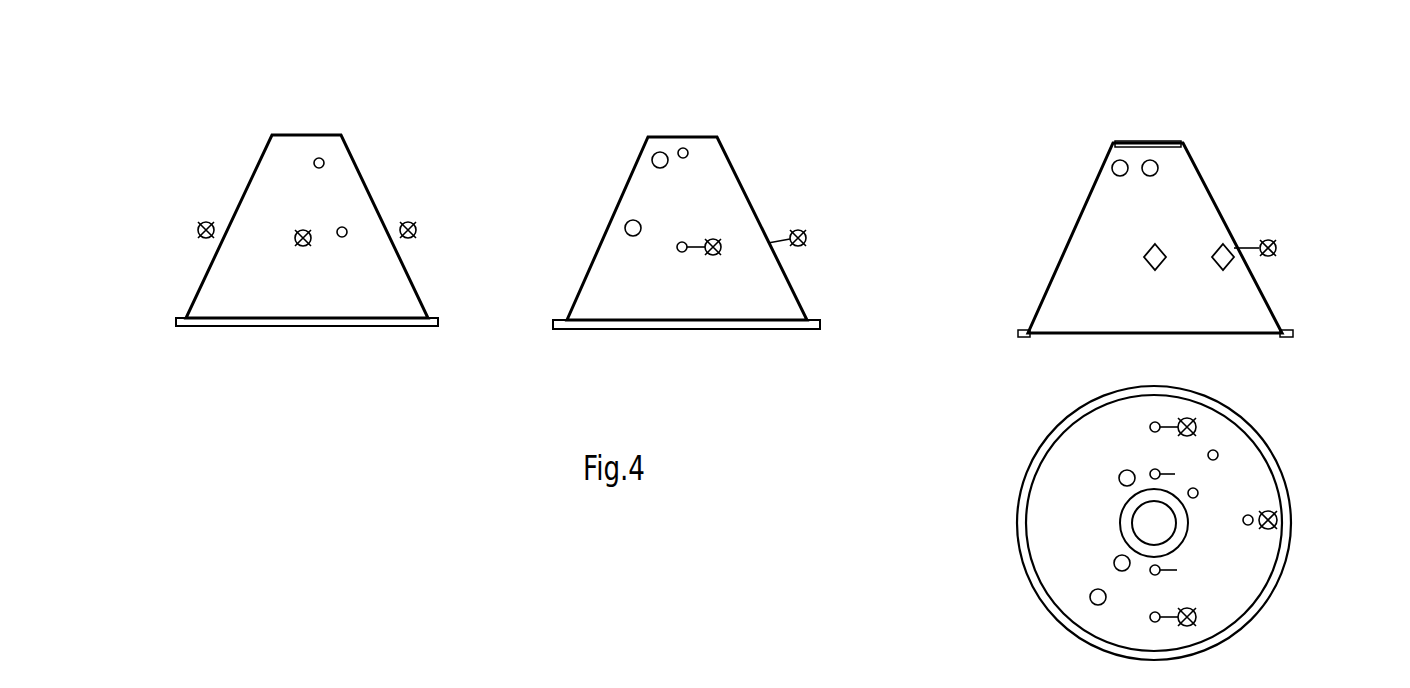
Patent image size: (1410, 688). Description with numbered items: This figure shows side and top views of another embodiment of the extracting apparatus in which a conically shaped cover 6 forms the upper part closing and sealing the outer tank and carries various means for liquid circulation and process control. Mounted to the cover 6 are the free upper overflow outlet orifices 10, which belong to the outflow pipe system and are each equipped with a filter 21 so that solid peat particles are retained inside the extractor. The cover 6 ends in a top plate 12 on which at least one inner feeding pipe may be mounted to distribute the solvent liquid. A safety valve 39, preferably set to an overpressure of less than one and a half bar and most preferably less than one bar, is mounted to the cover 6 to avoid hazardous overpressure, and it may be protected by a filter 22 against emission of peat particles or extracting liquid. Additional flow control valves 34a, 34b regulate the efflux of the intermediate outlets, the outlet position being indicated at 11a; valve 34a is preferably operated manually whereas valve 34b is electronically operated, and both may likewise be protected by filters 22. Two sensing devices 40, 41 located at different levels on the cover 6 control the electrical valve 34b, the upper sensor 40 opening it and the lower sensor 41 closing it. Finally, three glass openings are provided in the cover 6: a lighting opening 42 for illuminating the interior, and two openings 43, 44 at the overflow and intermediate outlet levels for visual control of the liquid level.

The conical cover 6 is at (293, 135).
The upper overflow outlet orifice 10 is at (260, 153).
The fastening hole with pin 11a is at (722, 238).
The top plate 12 is at (1140, 142).
The filter 21 is at (1158, 166).
The filter 22 is at (1162, 246).
The manually operated valve 34a is at (197, 230).
The electrically operated valve 34b is at (417, 230).
The safety valve 39 is at (296, 243).
The upper sensing device 40 is at (325, 165).
The lower sensing device 41 is at (348, 234).
The lighting opening 42 is at (1112, 163).
The glass opening 43 is at (653, 155).
The glass opening 44 is at (624, 228).